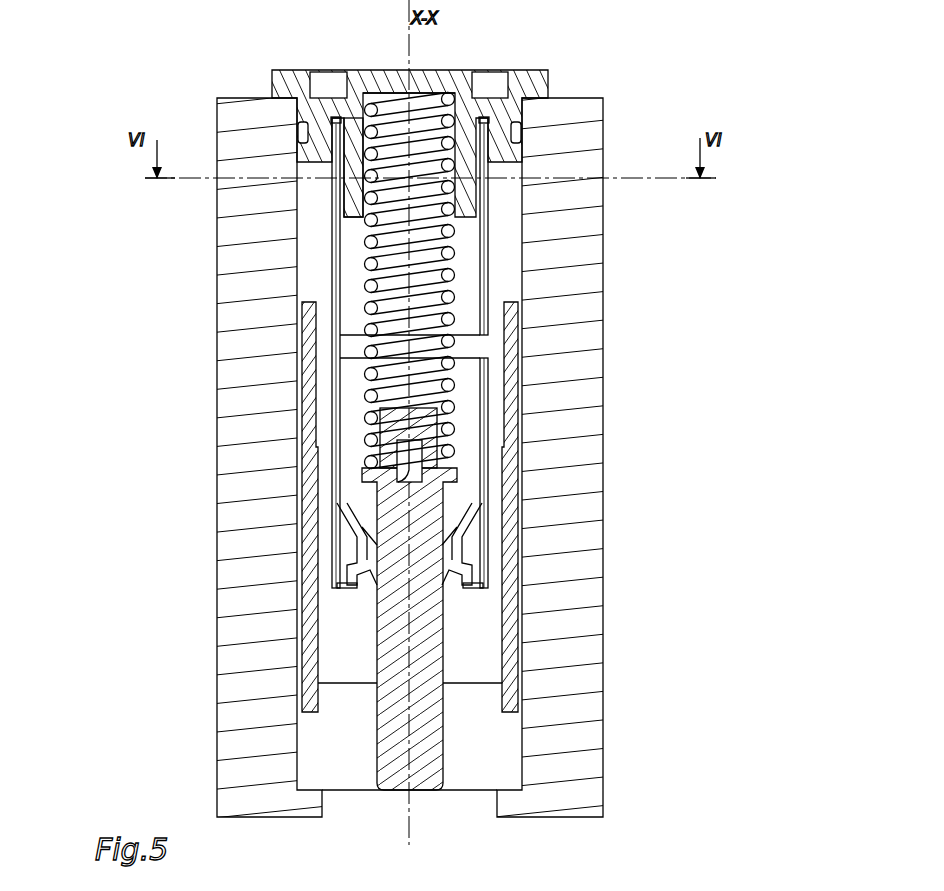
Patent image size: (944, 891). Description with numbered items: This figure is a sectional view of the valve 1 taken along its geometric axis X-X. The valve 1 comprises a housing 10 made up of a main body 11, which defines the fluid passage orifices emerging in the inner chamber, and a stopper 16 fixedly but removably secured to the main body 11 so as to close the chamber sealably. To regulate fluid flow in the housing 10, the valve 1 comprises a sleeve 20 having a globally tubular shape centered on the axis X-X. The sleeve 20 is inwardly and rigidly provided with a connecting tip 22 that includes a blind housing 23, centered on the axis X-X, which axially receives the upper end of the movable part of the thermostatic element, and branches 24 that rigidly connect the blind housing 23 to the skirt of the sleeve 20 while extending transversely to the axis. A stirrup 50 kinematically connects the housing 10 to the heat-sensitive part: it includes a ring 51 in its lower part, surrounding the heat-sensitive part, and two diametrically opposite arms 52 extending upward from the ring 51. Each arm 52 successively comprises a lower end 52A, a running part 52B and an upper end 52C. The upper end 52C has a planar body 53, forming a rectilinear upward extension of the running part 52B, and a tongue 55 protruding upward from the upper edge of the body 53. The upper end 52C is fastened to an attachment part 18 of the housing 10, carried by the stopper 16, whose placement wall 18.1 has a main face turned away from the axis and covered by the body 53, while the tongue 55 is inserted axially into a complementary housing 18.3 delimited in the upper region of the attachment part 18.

The valve 1 is at (242, 80).
The housing 10 is at (217, 265).
The main body 11 is at (233, 400).
The stopper 16 is at (293, 72).
The attachment part 18 is at (491, 121).
The placement wall 18.1 is at (338, 212).
The housing 18.3 is at (344, 150).
The sleeve 20 is at (296, 562).
The connecting tip 22 is at (392, 418).
The blind housing 23 is at (345, 500).
The branches 24 is at (353, 422).
The stirrup 50 is at (803, 335).
The ring 51 is at (463, 558).
The arms 52 is at (332, 282).
The lower end 52A is at (492, 518).
The running part 52B is at (492, 290).
The upper end 52C is at (490, 193).
The body 53 is at (344, 186).
The tongue 55 is at (330, 148).